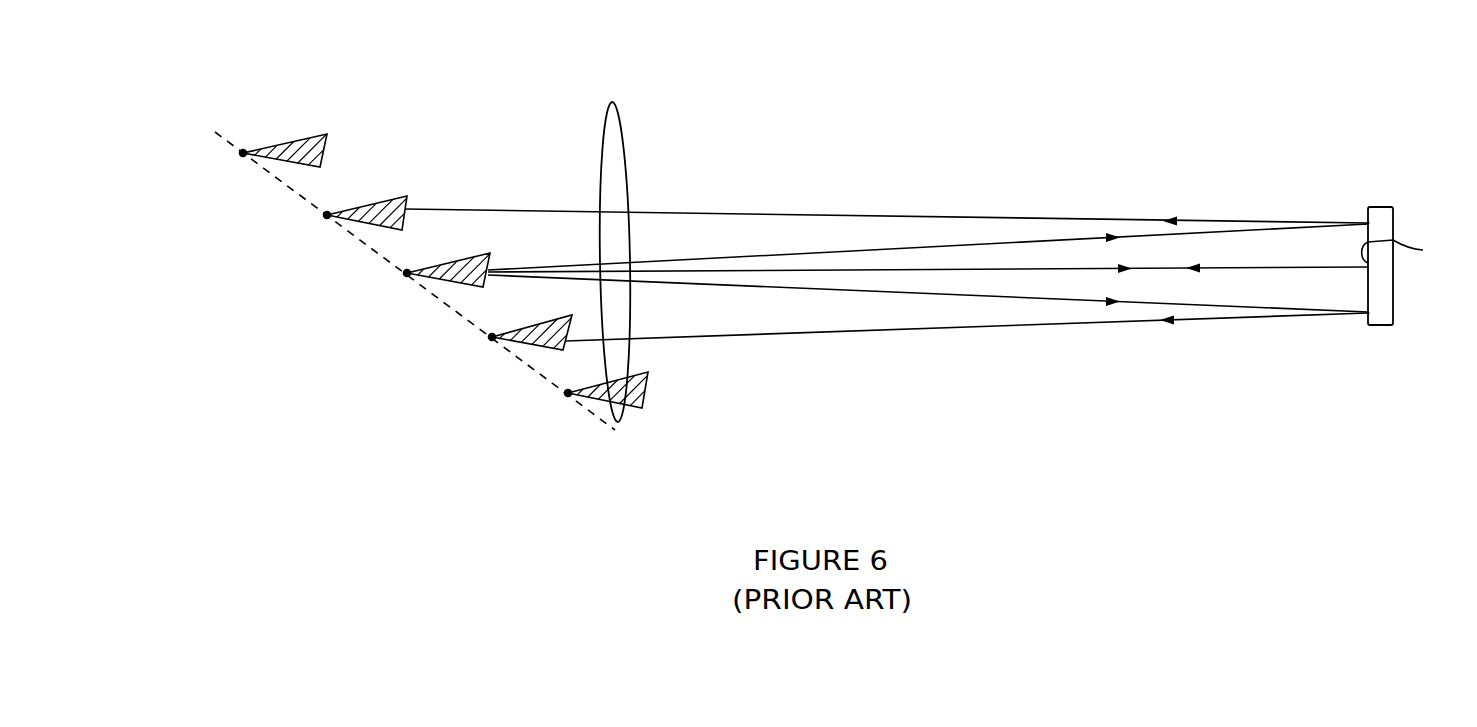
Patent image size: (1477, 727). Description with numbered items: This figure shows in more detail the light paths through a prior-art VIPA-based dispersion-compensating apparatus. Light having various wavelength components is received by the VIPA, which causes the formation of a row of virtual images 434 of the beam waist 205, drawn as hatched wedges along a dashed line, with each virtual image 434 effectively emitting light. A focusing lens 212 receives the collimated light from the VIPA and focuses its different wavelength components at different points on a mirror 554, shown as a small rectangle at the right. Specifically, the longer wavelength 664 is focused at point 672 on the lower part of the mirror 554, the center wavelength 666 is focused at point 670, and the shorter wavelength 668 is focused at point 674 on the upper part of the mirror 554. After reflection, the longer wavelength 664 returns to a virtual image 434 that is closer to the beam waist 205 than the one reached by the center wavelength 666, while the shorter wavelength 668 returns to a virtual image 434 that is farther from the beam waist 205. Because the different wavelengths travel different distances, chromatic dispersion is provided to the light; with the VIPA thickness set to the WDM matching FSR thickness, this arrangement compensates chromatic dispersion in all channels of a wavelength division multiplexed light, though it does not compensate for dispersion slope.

The virtual image 434 is at (243, 153).
The beam waist 205 is at (568, 393).
The focusing lens 212 is at (613, 102).
The mirror 554 is at (1381, 207).
The longer wavelength 664 is at (885, 295).
The center wavelength 666 is at (982, 270).
The shorter wavelength 668 is at (868, 252).
The point 670 is at (1409, 268).
The point 672 is at (1368, 313).
The point 674 is at (1367, 222).